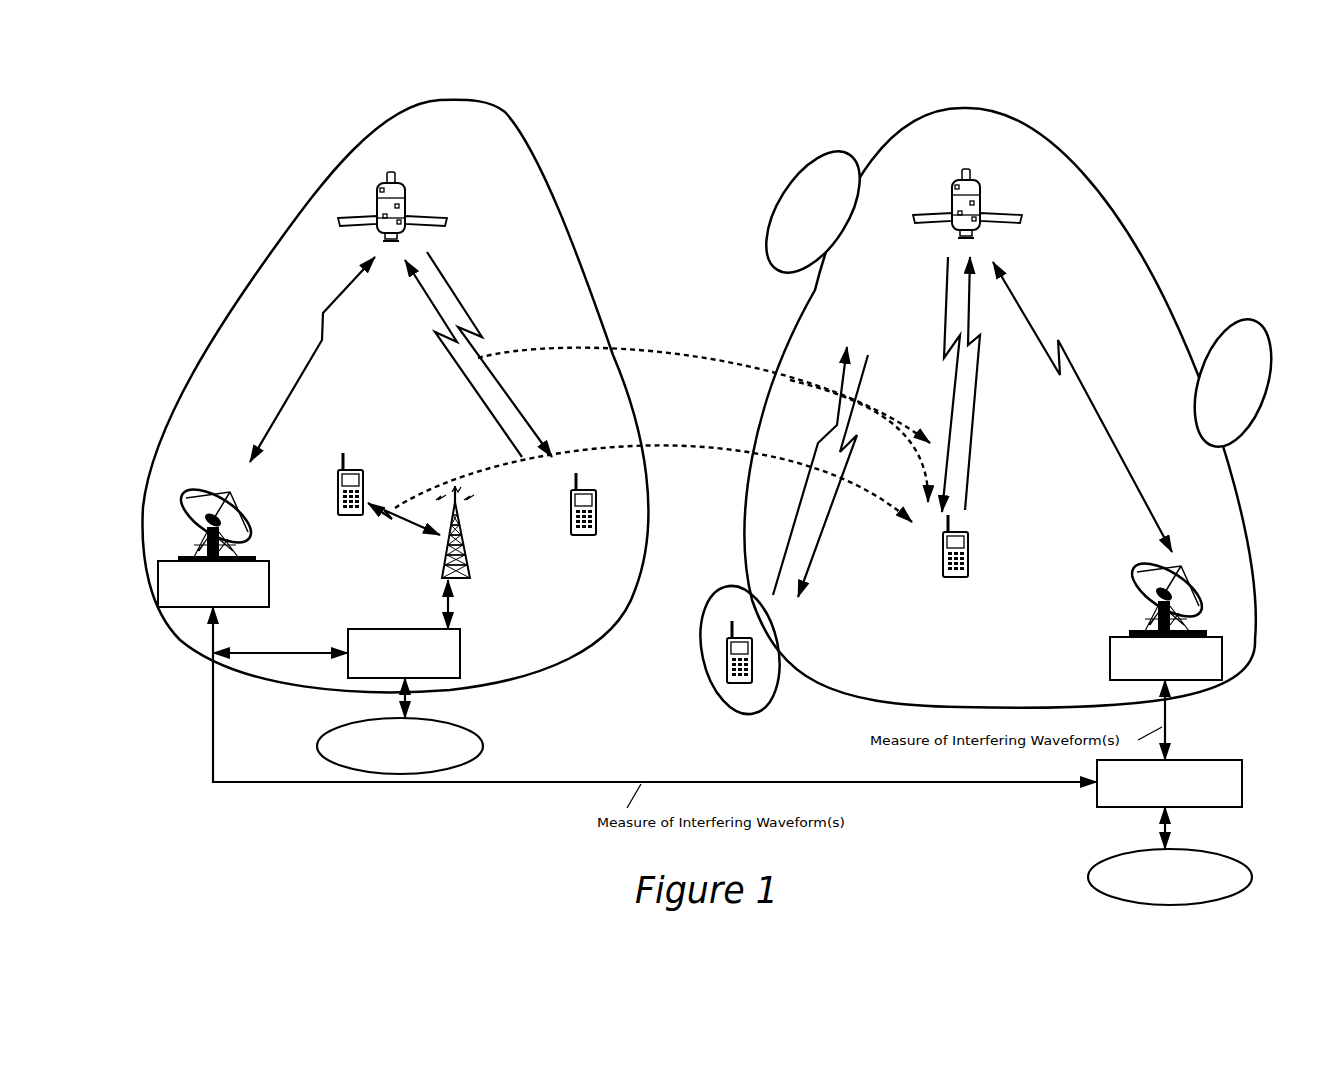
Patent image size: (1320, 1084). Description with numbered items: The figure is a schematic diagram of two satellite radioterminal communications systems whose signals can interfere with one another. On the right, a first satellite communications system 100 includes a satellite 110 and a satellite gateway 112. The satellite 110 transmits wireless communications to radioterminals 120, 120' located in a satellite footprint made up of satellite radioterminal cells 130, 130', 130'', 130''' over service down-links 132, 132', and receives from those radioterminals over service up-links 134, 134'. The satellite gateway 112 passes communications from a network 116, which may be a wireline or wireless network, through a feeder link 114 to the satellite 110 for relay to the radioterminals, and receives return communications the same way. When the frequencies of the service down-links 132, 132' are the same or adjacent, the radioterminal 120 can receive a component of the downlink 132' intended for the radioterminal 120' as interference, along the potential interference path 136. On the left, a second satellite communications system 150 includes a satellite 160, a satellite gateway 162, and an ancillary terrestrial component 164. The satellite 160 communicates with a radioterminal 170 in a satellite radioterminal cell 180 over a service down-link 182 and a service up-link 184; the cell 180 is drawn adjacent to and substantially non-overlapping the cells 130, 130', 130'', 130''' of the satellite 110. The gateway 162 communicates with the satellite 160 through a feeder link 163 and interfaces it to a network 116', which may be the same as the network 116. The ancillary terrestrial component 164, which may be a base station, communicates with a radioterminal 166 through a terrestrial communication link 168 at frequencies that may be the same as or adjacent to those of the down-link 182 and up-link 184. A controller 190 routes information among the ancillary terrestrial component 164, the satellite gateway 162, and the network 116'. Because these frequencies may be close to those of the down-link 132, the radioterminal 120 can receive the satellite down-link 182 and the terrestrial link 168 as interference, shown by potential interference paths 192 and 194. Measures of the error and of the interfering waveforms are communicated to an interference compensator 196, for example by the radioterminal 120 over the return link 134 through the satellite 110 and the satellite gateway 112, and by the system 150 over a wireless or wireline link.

The first satellite communications system 100 is at (1145, 213).
The satellite 110 is at (983, 205).
The satellite gateway 112 is at (1108, 652).
The feeder link 114 is at (1080, 383).
The network 116 is at (1176, 856).
The network 116' is at (424, 726).
The radioterminal 120 is at (981, 546).
The radioterminal 120' is at (773, 665).
The satellite radioterminal cell 130 is at (1000, 408).
The satellite radioterminal cell 130' is at (729, 650).
The satellite radioterminal cell 130'' is at (812, 212).
The satellite radioterminal cell 130''' is at (1232, 383).
The service down-link 132 is at (928, 384).
The service down-link 132' is at (838, 476).
The service up-link 134 is at (997, 383).
The service up-link 134' is at (802, 471).
The potential interference path 136 is at (883, 402).
The second satellite communications system 150 is at (258, 218).
The satellite 160 is at (408, 203).
The satellite gateway 162 is at (270, 584).
The feeder link 163 is at (265, 413).
The ancillary terrestrial component 164 is at (460, 530).
The radioterminal 166 is at (355, 470).
The terrestrial communication link 168 is at (408, 535).
The radioterminal 170 is at (588, 488).
The satellite radioterminal cell 180 is at (527, 143).
The service down-link 182 is at (528, 423).
The service up-link 184 is at (502, 430).
The controller 190 is at (463, 660).
The potential interference path 192 is at (660, 358).
The potential interference path 194 is at (660, 445).
The interference compensator 196 is at (1220, 760).